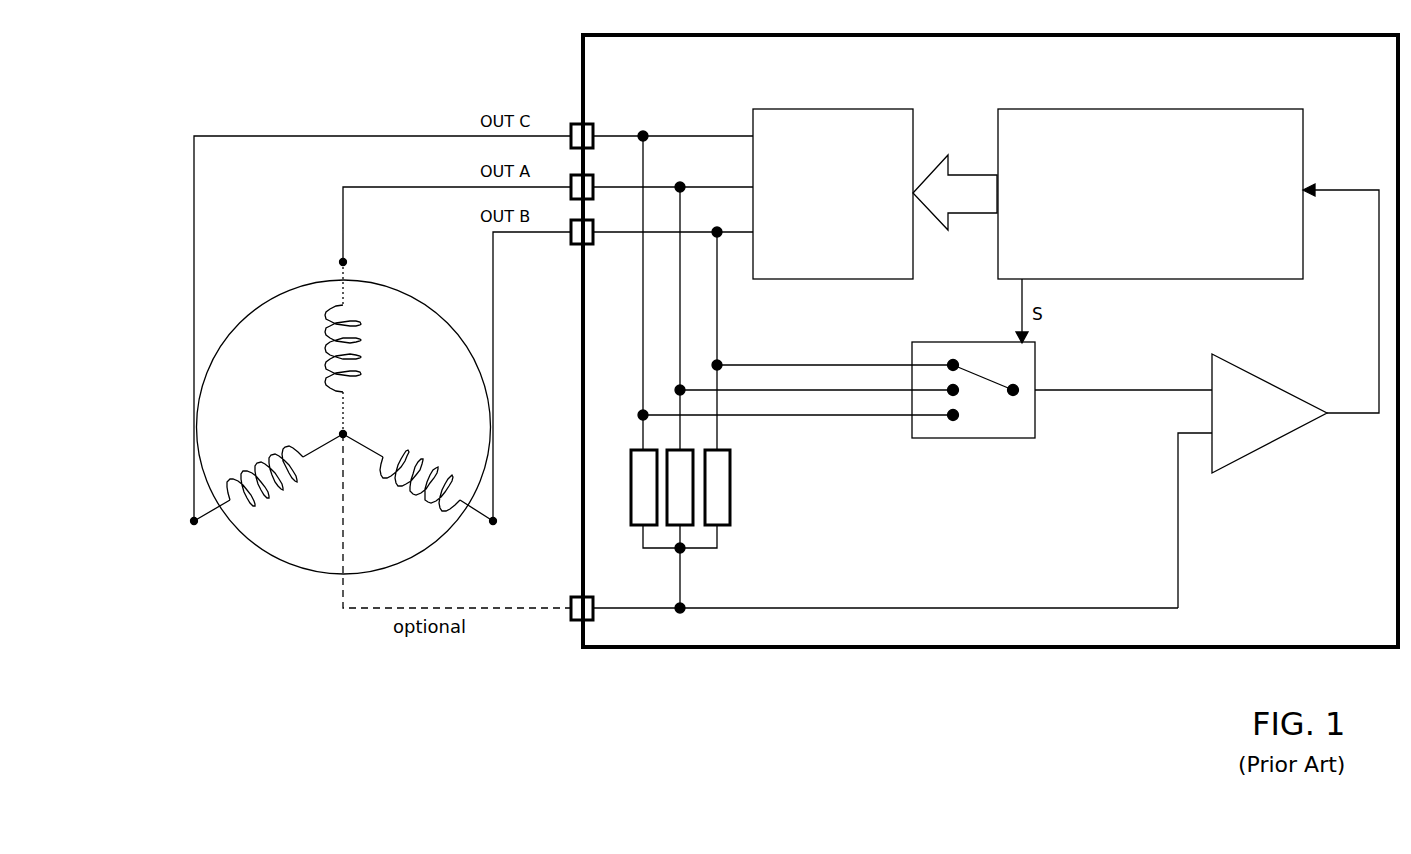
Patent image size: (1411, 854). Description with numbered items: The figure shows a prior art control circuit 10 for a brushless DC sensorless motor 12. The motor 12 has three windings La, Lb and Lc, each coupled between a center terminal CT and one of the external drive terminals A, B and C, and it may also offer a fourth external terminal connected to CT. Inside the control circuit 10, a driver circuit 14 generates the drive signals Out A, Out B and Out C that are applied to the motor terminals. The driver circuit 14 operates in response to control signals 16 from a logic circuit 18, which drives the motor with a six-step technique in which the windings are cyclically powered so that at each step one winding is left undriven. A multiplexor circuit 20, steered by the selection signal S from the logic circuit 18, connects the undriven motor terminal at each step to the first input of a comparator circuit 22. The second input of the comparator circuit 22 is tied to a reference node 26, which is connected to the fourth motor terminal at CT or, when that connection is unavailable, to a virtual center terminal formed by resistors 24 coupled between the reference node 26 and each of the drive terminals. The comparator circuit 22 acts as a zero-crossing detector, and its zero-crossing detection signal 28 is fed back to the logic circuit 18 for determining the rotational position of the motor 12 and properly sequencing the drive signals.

The control circuit 10 is at (800, 649).
The brushless DC sensorless motor 12 is at (278, 609).
The driver circuit 14 is at (833, 279).
The control signals 16 is at (970, 213).
The logic circuit 18 is at (1108, 279).
The multiplexor circuit 20 is at (972, 438).
The comparator circuit 22 is at (1272, 443).
The resistors 24 is at (759, 494).
The reference node 26 is at (817, 608).
The zero-crossing detection signal 28 is at (1345, 418).